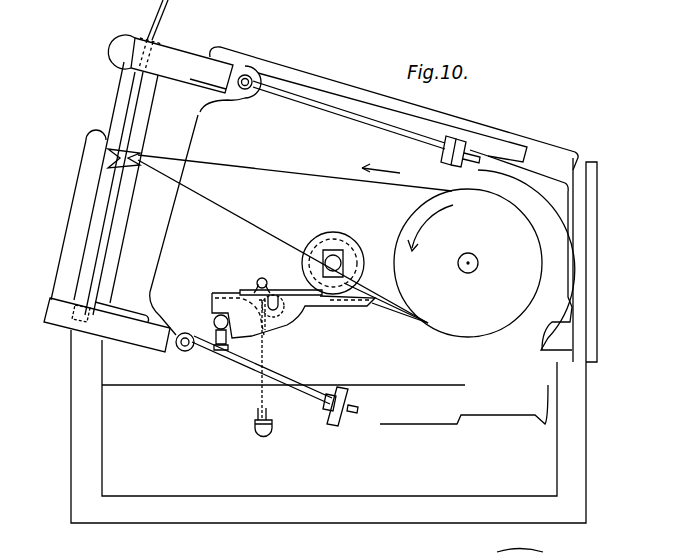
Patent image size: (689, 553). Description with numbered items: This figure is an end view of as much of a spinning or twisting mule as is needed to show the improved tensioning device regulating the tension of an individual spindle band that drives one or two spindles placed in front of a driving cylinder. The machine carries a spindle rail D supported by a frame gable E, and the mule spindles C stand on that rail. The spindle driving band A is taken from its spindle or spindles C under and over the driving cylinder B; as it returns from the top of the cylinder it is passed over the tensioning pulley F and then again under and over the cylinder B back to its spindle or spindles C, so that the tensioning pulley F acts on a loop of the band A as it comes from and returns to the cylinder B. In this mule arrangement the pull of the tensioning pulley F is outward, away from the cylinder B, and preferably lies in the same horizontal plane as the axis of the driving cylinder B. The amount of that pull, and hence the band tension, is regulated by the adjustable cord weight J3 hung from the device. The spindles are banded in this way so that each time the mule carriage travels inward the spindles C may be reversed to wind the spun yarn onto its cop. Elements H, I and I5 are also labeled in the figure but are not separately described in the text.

The spindle driving band A is at (263, 170).
The spindle driving cylinder B is at (468, 263).
The spindles C is at (100, 230).
The spindle rail D is at (182, 58).
The frame gable E is at (146, 205).
The tensioning pulley F is at (353, 243).
The plate H is at (303, 292).
The lever I is at (212, 293).
The pin I5 is at (258, 282).
The adjustable cord weight J3 is at (278, 424).